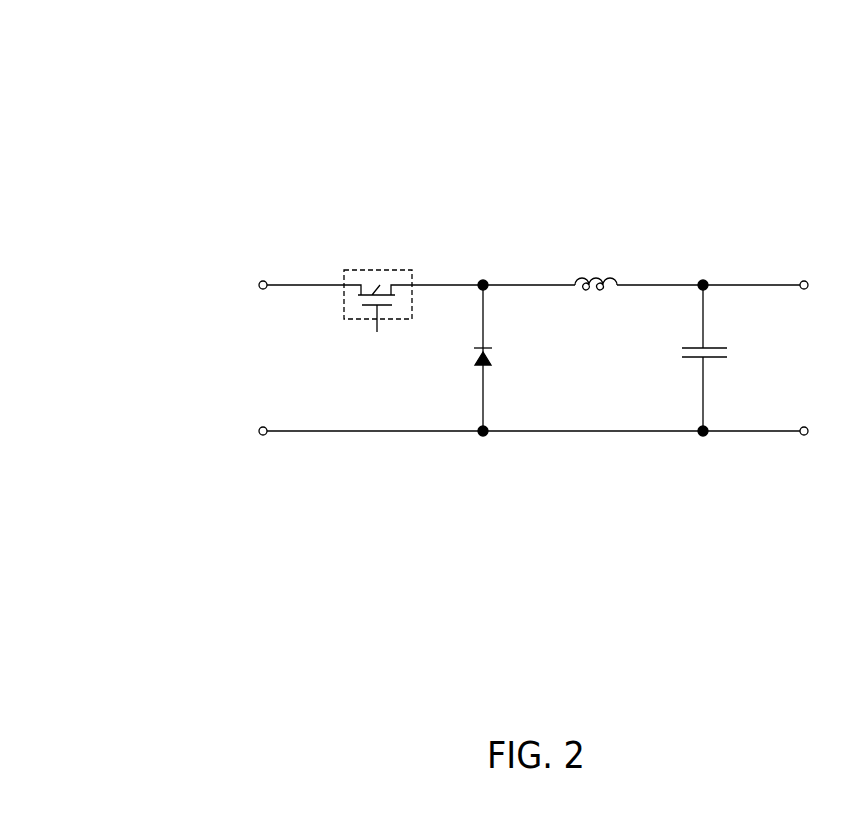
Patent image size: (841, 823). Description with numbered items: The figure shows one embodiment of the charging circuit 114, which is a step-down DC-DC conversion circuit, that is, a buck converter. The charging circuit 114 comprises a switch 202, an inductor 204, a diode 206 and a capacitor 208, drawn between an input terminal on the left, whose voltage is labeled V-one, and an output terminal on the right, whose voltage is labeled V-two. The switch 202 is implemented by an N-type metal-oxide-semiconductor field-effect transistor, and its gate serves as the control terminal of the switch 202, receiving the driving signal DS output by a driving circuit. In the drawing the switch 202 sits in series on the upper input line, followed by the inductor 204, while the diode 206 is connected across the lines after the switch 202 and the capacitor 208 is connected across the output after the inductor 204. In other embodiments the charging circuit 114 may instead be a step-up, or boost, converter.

The charging circuit 114 is at (38, 34).
The switch 202 is at (381, 269).
The inductor 204 is at (600, 280).
The diode 206 is at (490, 359).
The capacitor 208 is at (686, 358).